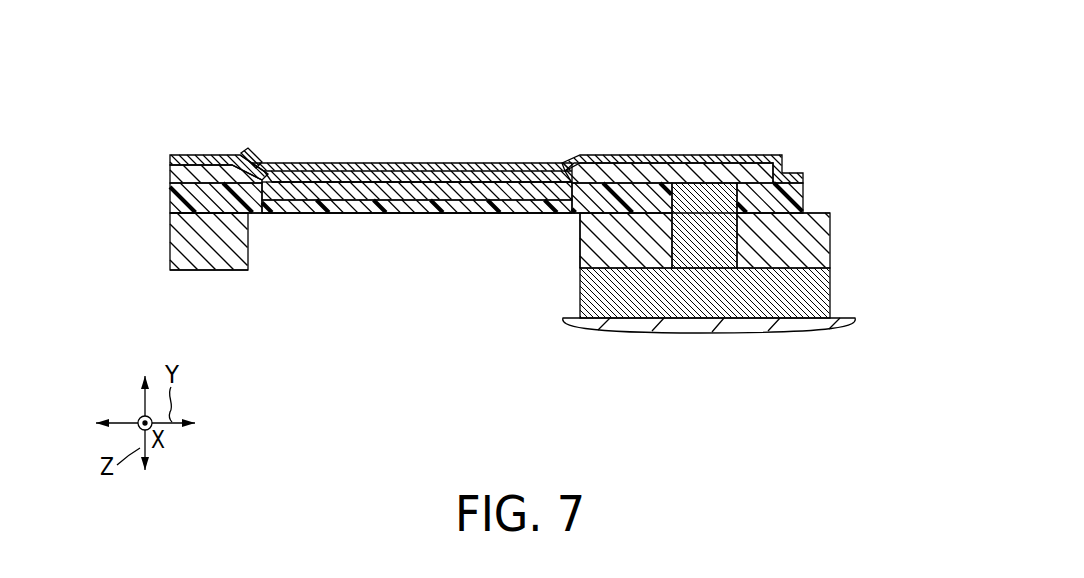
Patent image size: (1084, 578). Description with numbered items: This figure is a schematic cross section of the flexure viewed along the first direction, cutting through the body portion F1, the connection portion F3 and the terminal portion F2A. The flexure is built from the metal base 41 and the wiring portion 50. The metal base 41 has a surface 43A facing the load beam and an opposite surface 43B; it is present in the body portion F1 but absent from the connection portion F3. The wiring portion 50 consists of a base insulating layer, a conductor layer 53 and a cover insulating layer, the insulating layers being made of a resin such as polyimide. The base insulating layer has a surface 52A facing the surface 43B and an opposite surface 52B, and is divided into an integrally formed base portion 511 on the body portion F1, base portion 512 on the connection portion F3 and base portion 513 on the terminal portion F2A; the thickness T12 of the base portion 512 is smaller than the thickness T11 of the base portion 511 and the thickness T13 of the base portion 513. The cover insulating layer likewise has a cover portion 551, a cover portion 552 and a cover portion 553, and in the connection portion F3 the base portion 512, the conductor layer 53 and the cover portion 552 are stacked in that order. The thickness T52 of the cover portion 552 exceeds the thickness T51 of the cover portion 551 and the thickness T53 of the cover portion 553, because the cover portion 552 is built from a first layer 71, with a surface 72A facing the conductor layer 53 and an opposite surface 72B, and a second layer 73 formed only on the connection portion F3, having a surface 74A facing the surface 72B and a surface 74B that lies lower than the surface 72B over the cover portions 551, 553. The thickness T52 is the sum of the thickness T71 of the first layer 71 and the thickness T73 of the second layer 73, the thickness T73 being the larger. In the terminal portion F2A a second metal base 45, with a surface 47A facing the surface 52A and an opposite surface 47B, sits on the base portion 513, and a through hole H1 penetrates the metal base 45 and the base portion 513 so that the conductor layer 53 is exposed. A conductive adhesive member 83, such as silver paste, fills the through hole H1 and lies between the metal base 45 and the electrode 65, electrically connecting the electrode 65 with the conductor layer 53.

The metal base 41 is at (236, 275).
The surface 43A is at (205, 273).
The surface 43B is at (172, 198).
The metal base 45 is at (823, 247).
The surface 47A is at (816, 210).
The surface 47B is at (597, 274).
The wiring portion 50 is at (137, 134).
The base portion 511 is at (171, 190).
The base portion 512 is at (443, 214).
The base portion 513 is at (798, 196).
The surface 52A is at (303, 216).
The surface 52B is at (330, 214).
The conductor layer 53 is at (171, 176).
The cover portion 551 is at (170, 160).
The cover portion 552 is at (405, 95).
The cover portion 553 is at (783, 158).
The electrode 65 is at (834, 312).
The first layer 71 is at (447, 176).
The surface 72A is at (358, 206).
The surface 72B is at (372, 208).
The second layer 73 is at (456, 164).
The surface 74A is at (274, 184).
The surface 74B is at (292, 157).
The adhesive member 83 is at (586, 320).
The through hole H1 is at (725, 195).
The thickness T11 is at (200, 183).
The thickness T12 is at (508, 188).
The thickness T13 is at (637, 183).
The thickness T51 is at (200, 178).
The thickness T52 is at (470, 106).
The thickness T53 is at (637, 176).
The thickness T71 is at (508, 193).
The thickness T73 is at (508, 163).
The body portion F1 is at (247, 150).
The connection portion F3 is at (578, 150).
The terminal portion F2A is at (830, 148).